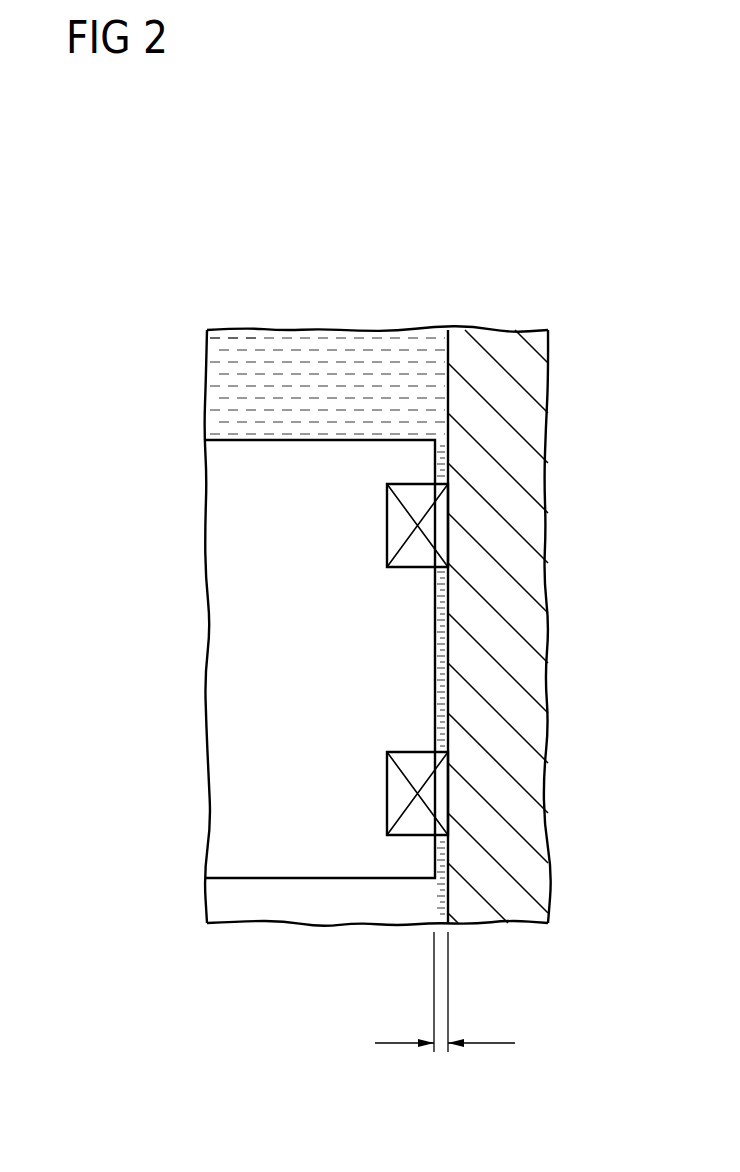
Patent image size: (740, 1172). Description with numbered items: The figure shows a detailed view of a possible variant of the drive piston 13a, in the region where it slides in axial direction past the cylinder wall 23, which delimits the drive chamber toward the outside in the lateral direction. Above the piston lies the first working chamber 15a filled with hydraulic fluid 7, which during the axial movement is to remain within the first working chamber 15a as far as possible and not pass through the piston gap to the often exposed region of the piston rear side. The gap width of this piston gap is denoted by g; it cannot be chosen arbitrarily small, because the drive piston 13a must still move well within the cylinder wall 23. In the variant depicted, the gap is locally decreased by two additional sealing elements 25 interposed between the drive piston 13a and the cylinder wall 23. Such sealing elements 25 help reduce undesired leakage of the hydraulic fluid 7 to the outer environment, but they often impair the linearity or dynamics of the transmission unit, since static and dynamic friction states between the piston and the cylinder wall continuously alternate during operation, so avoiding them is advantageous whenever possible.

The drive piston 13a is at (218, 660).
The first working chamber 15a is at (385, 350).
The hydraulic fluid 7 is at (218, 385).
The cylinder wall 23 is at (527, 668).
The sealing elements 25 is at (398, 525).
The gap width g is at (445, 1012).